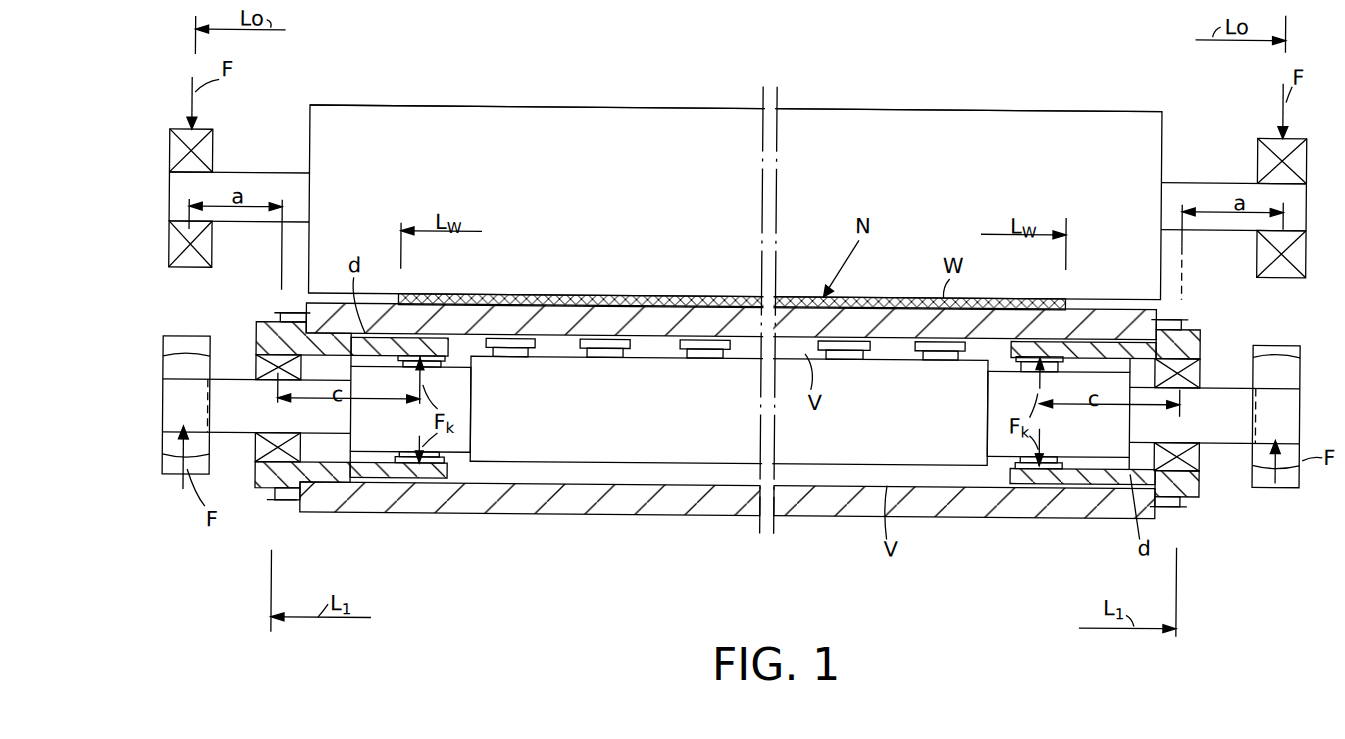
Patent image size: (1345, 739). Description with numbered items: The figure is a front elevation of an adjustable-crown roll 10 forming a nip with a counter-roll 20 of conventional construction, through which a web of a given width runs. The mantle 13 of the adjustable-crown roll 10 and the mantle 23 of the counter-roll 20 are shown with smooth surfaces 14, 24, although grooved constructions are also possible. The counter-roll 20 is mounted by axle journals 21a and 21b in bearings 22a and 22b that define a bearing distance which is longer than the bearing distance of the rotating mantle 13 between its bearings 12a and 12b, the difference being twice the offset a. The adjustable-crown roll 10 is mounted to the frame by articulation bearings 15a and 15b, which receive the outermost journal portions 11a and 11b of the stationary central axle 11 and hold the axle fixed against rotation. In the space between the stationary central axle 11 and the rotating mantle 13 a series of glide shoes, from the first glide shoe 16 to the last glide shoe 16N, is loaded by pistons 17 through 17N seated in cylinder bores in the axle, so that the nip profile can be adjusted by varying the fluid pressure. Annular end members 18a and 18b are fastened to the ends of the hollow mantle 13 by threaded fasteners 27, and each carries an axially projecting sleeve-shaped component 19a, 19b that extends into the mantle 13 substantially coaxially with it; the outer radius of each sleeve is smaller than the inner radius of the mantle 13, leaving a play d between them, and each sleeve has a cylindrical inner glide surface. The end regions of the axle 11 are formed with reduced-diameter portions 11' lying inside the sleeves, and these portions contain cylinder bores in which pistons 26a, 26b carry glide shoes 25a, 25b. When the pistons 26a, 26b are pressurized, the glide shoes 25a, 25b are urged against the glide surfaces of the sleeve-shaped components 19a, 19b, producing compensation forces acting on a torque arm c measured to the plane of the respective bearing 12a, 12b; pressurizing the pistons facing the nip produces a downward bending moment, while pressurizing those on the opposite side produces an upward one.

The adjustable-crown roll 10 is at (712, 492).
The stationary central axle 11 is at (728, 457).
The reduced diameter portion 11' is at (740, 407).
The outer journal portion 11a is at (230, 396).
The outer journal portion 11b is at (1243, 437).
The bearing 12a is at (283, 460).
The bearing 12b is at (1180, 483).
The mantle 13 is at (638, 496).
The smooth surface 14 is at (855, 515).
The articulation bearing 15a is at (168, 452).
The articulation bearing 15b is at (1280, 481).
The glide shoe 16 is at (537, 342).
The piston 17 is at (518, 355).
The glide shoe 16N is at (917, 355).
The piston 17N is at (943, 355).
The annular end member 18a is at (273, 322).
The annular end member 18b is at (1203, 320).
The sleeve-shaped component 19a is at (395, 352).
The sleeve-shaped component 19b is at (1050, 323).
The counter-roll 20 is at (677, 122).
The axle journal 21a is at (273, 183).
The axle journal 21b is at (1197, 181).
The bearing 22a is at (210, 147).
The bearing 22b is at (1268, 134).
The mantle 23 is at (902, 120).
The smooth surface 24 is at (625, 103).
The glide shoe 25a is at (450, 457).
The glide shoe 25b is at (1050, 481).
The piston 26a is at (410, 465).
The piston 26b is at (1033, 458).
The threaded fastener 27 is at (270, 312).